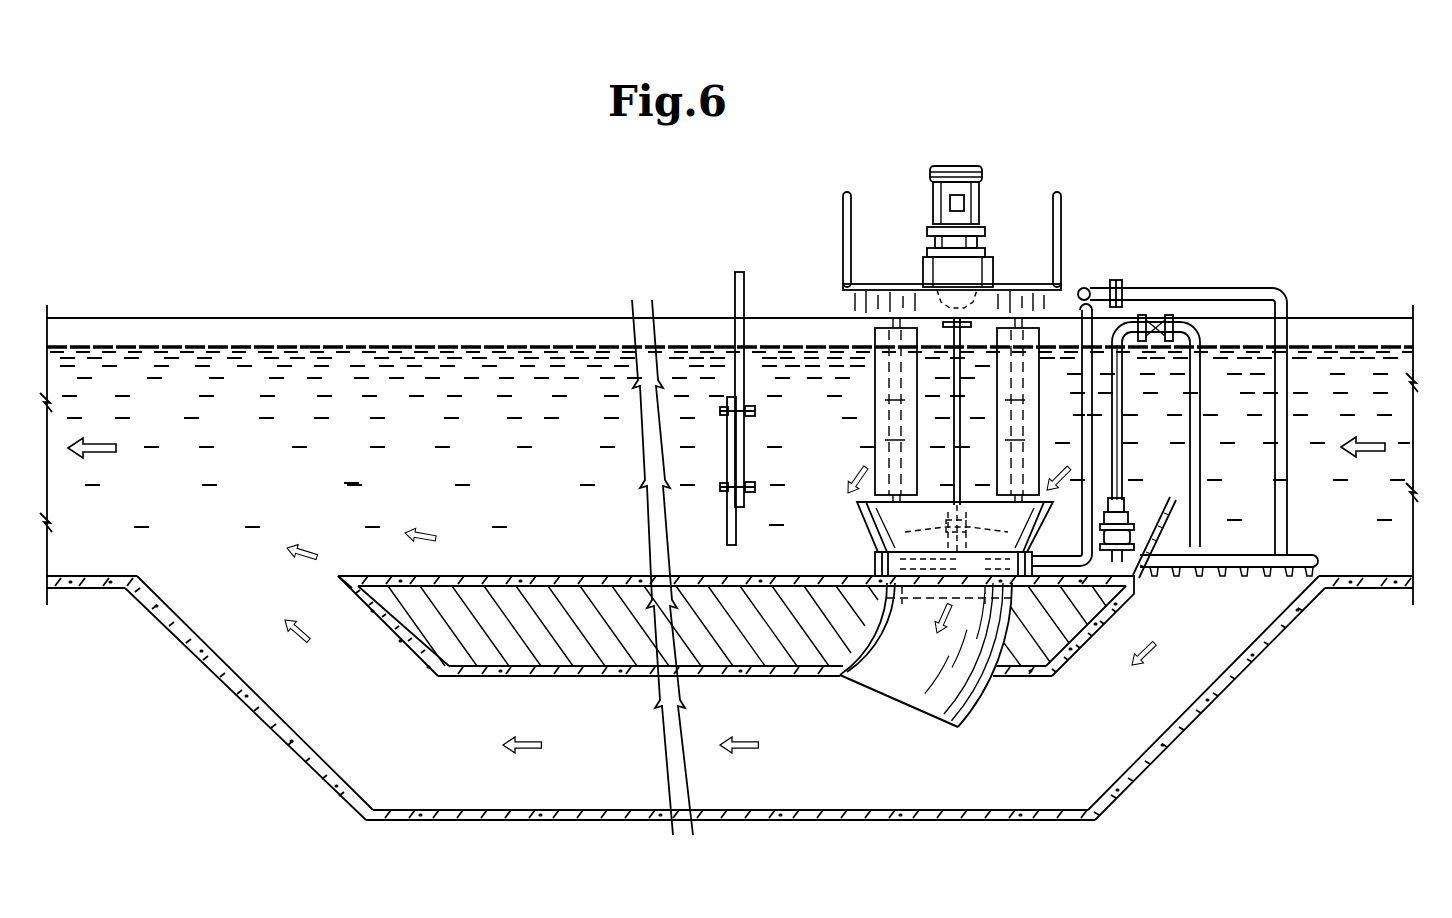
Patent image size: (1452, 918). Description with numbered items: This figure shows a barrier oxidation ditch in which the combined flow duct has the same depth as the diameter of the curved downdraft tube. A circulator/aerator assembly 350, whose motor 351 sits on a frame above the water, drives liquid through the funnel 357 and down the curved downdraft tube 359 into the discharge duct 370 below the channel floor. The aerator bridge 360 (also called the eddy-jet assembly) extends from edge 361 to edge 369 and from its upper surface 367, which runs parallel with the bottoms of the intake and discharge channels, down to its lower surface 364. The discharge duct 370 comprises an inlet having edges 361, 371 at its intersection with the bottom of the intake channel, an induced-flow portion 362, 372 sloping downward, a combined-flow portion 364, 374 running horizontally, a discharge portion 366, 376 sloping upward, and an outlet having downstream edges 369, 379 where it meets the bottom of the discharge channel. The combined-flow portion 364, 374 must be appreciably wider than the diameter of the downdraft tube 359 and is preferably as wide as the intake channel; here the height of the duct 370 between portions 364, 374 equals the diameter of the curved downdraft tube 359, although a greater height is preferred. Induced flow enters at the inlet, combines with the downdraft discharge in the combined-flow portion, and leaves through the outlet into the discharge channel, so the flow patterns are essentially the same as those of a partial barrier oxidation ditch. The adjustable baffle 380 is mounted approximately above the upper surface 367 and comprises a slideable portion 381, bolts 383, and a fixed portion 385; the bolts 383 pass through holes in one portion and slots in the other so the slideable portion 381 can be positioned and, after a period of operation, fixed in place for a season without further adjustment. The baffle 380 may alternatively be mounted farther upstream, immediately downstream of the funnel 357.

The circulator/aerator assembly 350 is at (952, 356).
The motor 351 is at (930, 196).
The funnel 357 is at (862, 516).
The curved downdraft tube 359 is at (963, 718).
The aerator bridge (eddy-jet assembly) 360 is at (951, 536).
The edge 361 is at (1135, 580).
The induced-flow portion 362 is at (1092, 620).
The combined-flow portion 364 is at (597, 676).
The discharge portion 366 is at (430, 664).
The upper surface 367 is at (634, 576).
The downstream edge 369 is at (345, 579).
The discharge duct 370 is at (730, 698).
The edge 371 is at (1322, 567).
The induced-flow portion 372 is at (1236, 665).
The combined-flow portion 374 is at (940, 822).
The discharge portion 376 is at (263, 722).
The downstream edge 379 is at (133, 577).
The adjustable baffle 380 is at (761, 401).
The slideable portion 381 is at (728, 527).
The bolts 383 is at (769, 449).
The fixed portion 385 is at (737, 283).